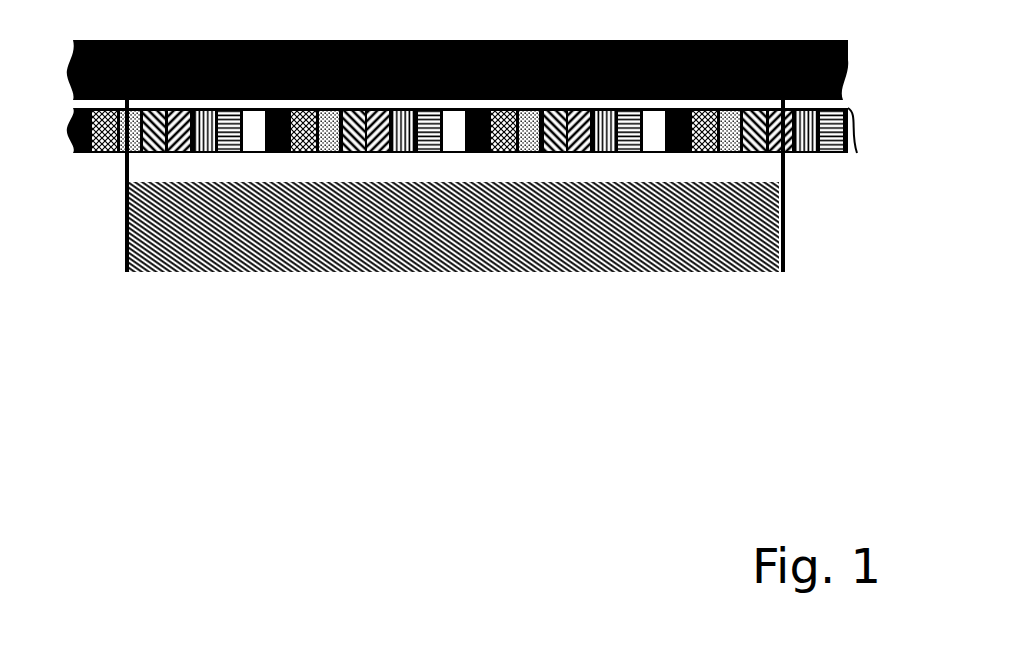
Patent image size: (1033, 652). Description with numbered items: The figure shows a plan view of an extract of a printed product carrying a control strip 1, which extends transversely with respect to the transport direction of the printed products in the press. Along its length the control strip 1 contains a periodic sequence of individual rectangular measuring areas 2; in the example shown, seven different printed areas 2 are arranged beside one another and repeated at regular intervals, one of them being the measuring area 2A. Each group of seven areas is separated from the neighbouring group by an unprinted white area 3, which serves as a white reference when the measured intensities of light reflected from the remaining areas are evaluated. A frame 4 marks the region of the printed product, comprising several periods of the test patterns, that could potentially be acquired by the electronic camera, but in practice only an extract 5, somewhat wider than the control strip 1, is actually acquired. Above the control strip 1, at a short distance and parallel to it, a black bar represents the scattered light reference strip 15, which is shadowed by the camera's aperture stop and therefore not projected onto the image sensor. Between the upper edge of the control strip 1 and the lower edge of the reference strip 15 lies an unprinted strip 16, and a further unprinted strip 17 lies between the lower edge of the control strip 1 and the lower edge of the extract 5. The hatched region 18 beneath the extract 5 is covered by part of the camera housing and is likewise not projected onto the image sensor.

The control strip 1 is at (715, 179).
The measuring areas 2 is at (143, 157).
The measuring area 2A is at (530, 147).
The white area 3 is at (450, 140).
The frame 4 is at (123, 250).
The extract 5 is at (432, 240).
The scattered light reference strip 15 is at (846, 64).
The unprinted strip 16 is at (833, 103).
The unprinted strip 17 is at (747, 167).
The region 18 is at (185, 230).